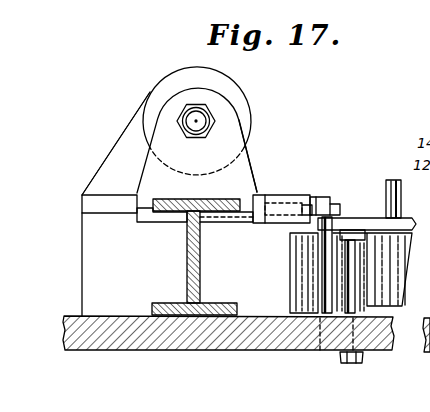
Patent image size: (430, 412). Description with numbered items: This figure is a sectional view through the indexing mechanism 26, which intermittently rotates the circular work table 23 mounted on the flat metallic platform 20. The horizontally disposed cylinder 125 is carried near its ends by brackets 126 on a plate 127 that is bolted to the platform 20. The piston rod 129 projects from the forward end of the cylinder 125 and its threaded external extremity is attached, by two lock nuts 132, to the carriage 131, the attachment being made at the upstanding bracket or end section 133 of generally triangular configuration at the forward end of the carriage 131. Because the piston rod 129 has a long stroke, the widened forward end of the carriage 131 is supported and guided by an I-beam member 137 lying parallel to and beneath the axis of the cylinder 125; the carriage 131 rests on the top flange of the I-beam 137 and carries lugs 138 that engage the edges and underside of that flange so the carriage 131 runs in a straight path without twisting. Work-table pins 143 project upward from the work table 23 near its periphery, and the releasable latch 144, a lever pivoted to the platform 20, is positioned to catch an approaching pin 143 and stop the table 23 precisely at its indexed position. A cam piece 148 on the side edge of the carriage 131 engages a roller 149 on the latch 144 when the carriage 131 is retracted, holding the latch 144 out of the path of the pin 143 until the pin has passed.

The platform 20 is at (217, 350).
The work table 23 is at (393, 302).
The indexing mechanism 26 is at (108, 155).
The cylinder 125 is at (248, 100).
The brackets 126 is at (132, 130).
The plate 127 is at (82, 201).
The piston rod 129 is at (193, 113).
The carriage 131 is at (137, 225).
The lock nuts 132 is at (196, 139).
The upstanding bracket or end section 133 is at (237, 167).
The I-beam member 137 is at (188, 277).
The lugs 138 is at (228, 220).
The work-table pins 143 is at (388, 180).
The releasable latch 144 is at (377, 216).
The cam piece 148 is at (302, 197).
The roller 149 is at (322, 197).